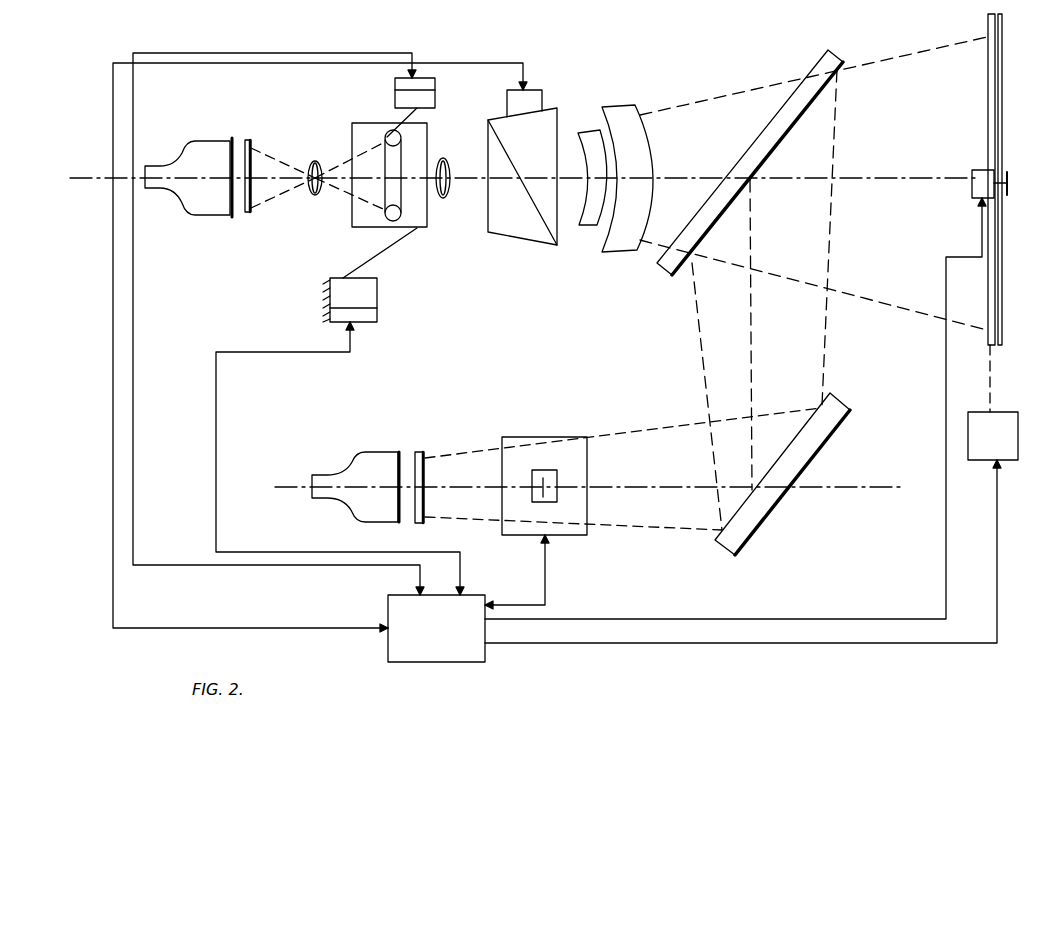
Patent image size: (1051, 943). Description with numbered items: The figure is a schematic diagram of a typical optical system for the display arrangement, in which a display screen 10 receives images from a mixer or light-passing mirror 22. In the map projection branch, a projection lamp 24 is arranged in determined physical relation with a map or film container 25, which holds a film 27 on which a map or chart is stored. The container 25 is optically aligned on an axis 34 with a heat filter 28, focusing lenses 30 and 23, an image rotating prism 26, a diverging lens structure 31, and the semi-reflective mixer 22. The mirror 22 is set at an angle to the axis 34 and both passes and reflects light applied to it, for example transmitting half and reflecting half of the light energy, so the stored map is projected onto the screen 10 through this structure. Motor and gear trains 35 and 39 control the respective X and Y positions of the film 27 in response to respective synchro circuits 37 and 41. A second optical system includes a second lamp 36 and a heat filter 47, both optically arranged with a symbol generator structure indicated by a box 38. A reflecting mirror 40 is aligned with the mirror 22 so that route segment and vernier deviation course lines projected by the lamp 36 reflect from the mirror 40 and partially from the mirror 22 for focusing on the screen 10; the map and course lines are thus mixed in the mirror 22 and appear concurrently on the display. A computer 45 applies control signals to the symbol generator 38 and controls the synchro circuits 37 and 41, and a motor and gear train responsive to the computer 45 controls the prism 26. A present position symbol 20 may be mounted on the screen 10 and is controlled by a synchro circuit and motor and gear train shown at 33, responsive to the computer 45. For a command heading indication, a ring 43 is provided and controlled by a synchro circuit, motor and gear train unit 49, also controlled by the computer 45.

The display screen 10 is at (1010, 136).
The present position symbol 20 is at (1007, 172).
The light-passing mirror (mixer) 22 is at (768, 133).
The focusing lens 23 is at (446, 157).
The projection lamp 24 is at (172, 165).
The film container 25 is at (355, 212).
The image rotating prism 26 is at (537, 238).
The film 27 is at (386, 165).
The heat filter 28 is at (252, 140).
The focusing lens 30 is at (318, 160).
The diverging lens structure 31 is at (582, 130).
The synchro circuit and motor and gear train 33 is at (622, 112).
The axis 34 is at (573, 178).
The motor and gear train 35 is at (340, 283).
The second lamp 36 is at (352, 453).
The synchro circuit 37 is at (372, 316).
The symbol generator 38 is at (582, 432).
The motor and gear train 39 is at (398, 98).
The reflecting mirror 40 is at (750, 522).
The synchro circuit 41 is at (427, 82).
The ring 43 is at (988, 345).
The computer 45 is at (453, 648).
The heat filter 47 is at (424, 452).
The synchro circuit, motor and gear train unit 49 is at (978, 425).